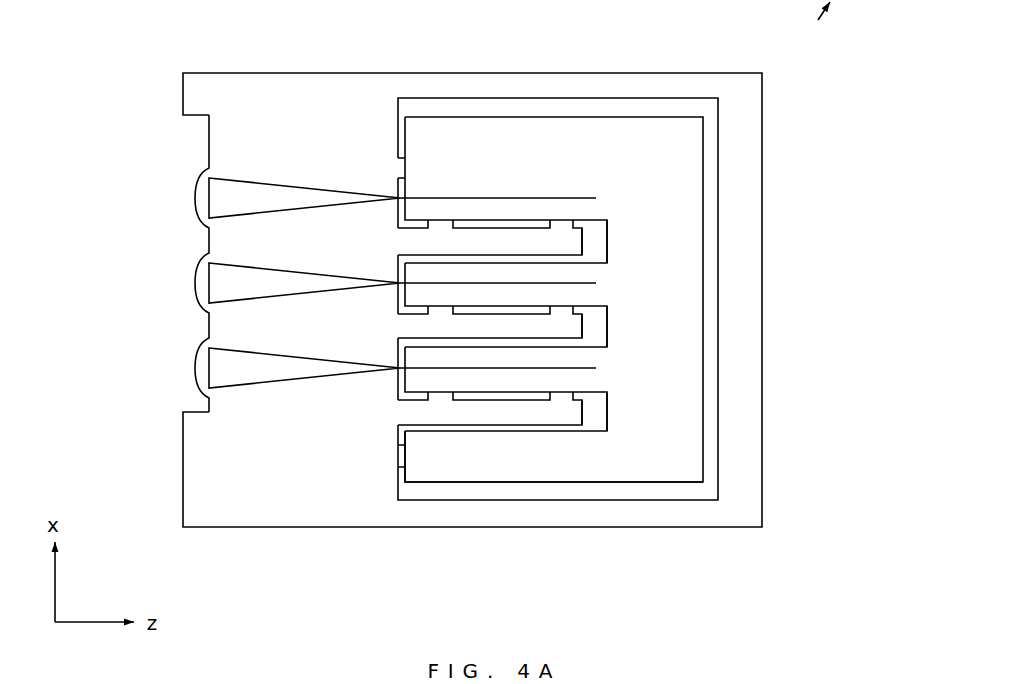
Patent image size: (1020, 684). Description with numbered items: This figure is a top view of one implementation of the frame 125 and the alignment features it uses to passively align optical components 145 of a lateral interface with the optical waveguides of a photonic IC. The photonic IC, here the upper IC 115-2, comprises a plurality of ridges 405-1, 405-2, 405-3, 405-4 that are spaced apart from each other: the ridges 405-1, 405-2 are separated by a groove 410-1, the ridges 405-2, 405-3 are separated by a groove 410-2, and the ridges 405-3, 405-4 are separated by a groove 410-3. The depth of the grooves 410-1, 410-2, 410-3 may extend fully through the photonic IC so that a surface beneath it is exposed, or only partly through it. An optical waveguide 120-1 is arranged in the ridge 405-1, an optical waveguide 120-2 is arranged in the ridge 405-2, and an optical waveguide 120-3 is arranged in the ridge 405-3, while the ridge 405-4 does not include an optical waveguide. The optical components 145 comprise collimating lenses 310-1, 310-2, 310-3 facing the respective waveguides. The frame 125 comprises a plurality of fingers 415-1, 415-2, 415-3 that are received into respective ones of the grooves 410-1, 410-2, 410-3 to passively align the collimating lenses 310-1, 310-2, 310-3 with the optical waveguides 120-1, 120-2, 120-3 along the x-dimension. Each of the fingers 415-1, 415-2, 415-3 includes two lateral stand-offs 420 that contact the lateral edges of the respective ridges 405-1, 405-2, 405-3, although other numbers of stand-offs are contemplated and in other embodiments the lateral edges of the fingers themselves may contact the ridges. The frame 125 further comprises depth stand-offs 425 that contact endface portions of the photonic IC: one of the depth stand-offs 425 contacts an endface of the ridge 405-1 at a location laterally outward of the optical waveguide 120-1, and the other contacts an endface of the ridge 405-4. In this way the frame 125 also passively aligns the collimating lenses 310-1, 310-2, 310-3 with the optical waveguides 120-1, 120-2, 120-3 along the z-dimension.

The frame 125 is at (773, 191).
The optical components 145 is at (177, 384).
The upper IC 115-2 is at (664, 461).
The collimating lens 310-1 is at (193, 190).
The collimating lens 310-2 is at (193, 278).
The collimating lens 310-3 is at (193, 363).
The optical waveguide 120-1 is at (549, 195).
The optical waveguide 120-2 is at (586, 281).
The optical waveguide 120-3 is at (586, 366).
The ridge 405-1 is at (440, 188).
The ridge 405-2 is at (427, 297).
The ridge 405-3 is at (426, 384).
The ridge 405-4 is at (502, 470).
The groove 410-1 is at (599, 223).
The groove 410-2 is at (599, 313).
The groove 410-3 is at (600, 405).
The finger 415-1 is at (428, 238).
The finger 415-2 is at (419, 327).
The finger 415-3 is at (427, 413).
The lateral stand-offs 420 is at (452, 221).
The depth stand-offs 425 is at (397, 161).